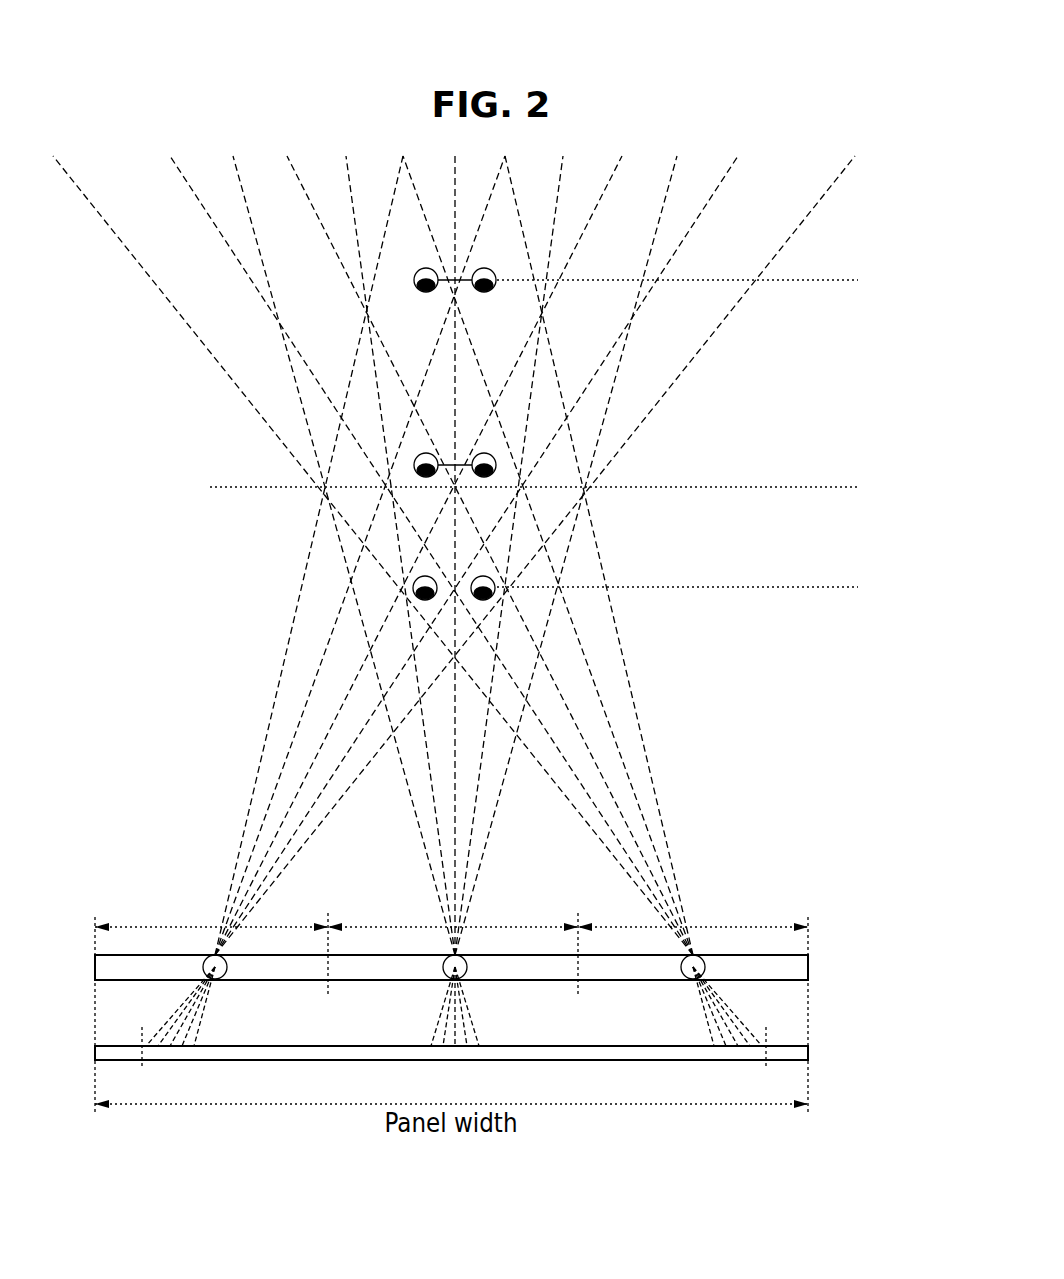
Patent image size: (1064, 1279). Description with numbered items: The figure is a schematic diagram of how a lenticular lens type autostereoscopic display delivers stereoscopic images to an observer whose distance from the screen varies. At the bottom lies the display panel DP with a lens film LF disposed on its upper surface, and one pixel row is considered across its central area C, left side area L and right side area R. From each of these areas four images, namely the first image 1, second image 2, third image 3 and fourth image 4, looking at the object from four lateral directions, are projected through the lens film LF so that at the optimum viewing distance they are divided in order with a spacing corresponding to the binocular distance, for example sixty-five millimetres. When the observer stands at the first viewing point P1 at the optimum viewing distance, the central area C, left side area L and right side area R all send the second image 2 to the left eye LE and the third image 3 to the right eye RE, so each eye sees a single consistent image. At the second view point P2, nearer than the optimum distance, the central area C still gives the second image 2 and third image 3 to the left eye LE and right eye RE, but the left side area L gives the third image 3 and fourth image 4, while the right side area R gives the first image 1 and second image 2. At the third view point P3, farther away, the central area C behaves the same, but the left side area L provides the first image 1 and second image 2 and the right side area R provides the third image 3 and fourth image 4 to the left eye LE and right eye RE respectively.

The lens film LF is at (822, 966).
The display panel DP is at (800, 1054).
The right side area R is at (500, 601).
The central area C is at (455, 601).
The left side area L is at (407, 601).
The right eye RE is at (442, 420).
The left eye LE is at (483, 420).
The first viewing point P1 is at (579, 489).
The second view point P2 is at (727, 589).
The third view point P3 is at (721, 282).
The first image 1 is at (493, 762).
The second image 2 is at (466, 762).
The third image 3 is at (439, 762).
The fourth image 4 is at (412, 762).